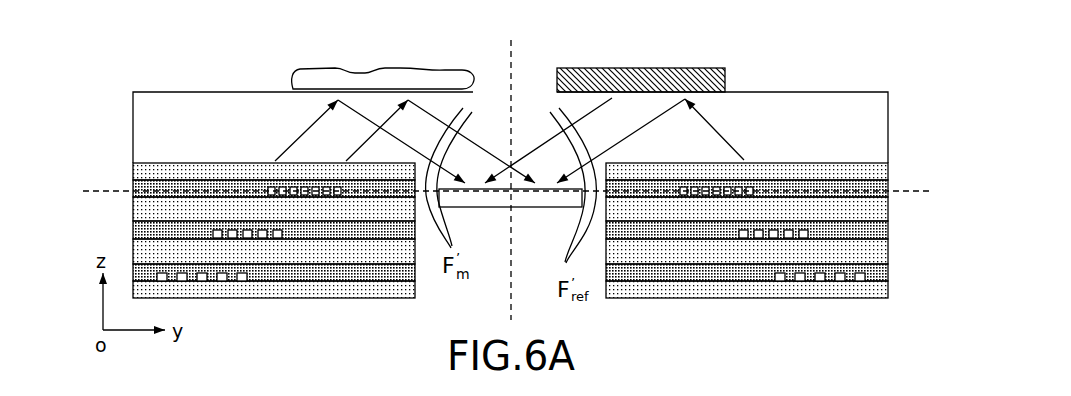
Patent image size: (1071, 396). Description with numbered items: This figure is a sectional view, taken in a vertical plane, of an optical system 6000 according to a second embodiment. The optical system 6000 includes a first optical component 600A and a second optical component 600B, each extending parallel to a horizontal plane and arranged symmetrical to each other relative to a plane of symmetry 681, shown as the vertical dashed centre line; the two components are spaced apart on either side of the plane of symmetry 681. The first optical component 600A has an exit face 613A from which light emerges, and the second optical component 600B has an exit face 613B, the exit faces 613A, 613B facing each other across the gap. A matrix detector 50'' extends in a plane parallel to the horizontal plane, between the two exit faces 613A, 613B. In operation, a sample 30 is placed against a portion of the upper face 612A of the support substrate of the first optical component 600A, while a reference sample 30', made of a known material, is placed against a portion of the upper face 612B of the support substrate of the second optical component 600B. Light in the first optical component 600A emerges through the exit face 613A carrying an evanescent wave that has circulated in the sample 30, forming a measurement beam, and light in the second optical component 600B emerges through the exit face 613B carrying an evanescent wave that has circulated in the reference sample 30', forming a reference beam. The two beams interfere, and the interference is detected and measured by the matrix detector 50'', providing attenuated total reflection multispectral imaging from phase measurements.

The optical system 6000 is at (97, 72).
The first optical component 600A is at (182, 87).
The second optical component 600B is at (870, 82).
The upper face of the support substrate of the first optical component 612A is at (265, 92).
The upper face of the support substrate of the second optical component 612B is at (752, 92).
The sample 30 is at (383, 54).
The reference sample 30' is at (641, 55).
The exit face 613A is at (463, 108).
The exit face 613B is at (559, 108).
The matrix detector 50'' is at (510, 227).
The plane of symmetry 681 is at (510, 283).